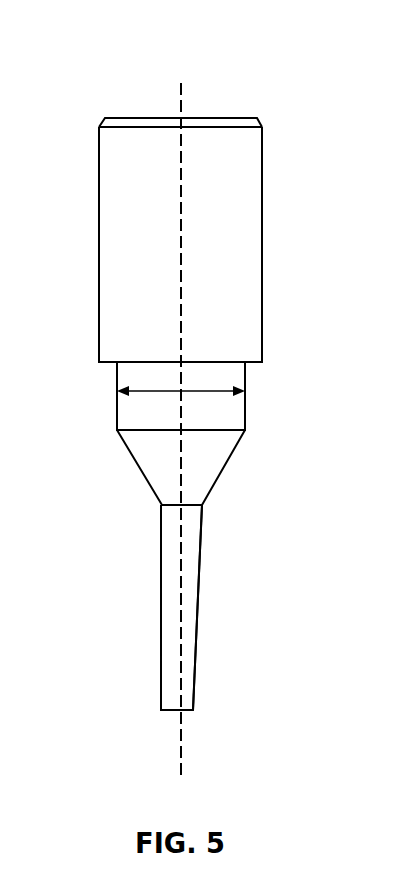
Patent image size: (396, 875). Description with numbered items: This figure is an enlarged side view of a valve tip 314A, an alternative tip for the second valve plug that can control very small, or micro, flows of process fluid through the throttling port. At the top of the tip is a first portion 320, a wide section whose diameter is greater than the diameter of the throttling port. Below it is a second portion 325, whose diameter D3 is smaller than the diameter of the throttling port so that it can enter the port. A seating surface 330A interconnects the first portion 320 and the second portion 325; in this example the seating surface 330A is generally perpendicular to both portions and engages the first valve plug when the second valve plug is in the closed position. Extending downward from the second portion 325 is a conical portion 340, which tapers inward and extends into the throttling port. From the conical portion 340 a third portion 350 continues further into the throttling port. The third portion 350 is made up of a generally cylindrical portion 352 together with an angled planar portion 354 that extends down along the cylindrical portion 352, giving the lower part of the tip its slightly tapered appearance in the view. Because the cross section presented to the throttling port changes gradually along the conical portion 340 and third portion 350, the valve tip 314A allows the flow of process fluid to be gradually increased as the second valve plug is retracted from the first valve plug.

The valve tip 314A is at (168, 83).
The first portion 320 is at (127, 248).
The seating surface 330A is at (259, 364).
The second portion 325 is at (132, 410).
The diameter of second portion D3 is at (220, 394).
The conical portion 340 is at (221, 472).
The third portion 350 is at (161, 573).
The cylindrical portion 352 is at (160, 655).
The angled planar portion 354 is at (196, 620).